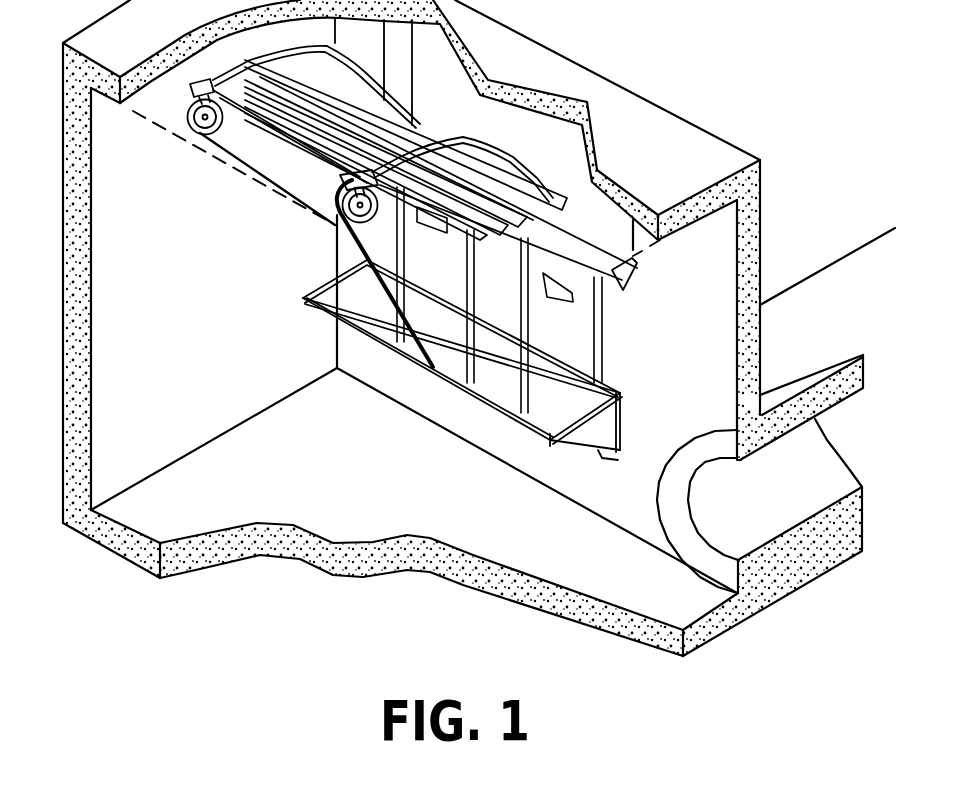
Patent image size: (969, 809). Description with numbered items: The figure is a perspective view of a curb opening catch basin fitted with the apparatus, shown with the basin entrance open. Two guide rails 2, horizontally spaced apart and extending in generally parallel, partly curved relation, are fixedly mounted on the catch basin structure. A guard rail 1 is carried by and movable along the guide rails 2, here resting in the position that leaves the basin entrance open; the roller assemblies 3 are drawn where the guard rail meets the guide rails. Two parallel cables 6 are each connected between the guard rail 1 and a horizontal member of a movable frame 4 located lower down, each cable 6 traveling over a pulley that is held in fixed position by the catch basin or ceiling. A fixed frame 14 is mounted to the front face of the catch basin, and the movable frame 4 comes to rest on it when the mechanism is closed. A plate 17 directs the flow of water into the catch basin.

The guard rail 1 is at (410, 123).
The guide rails 2 is at (410, 76).
The caster roller 3 is at (190, 134).
The frame 4 is at (440, 380).
The cables 6 is at (226, 162).
The fixed frame 14 is at (610, 327).
The plate 17 is at (637, 268).